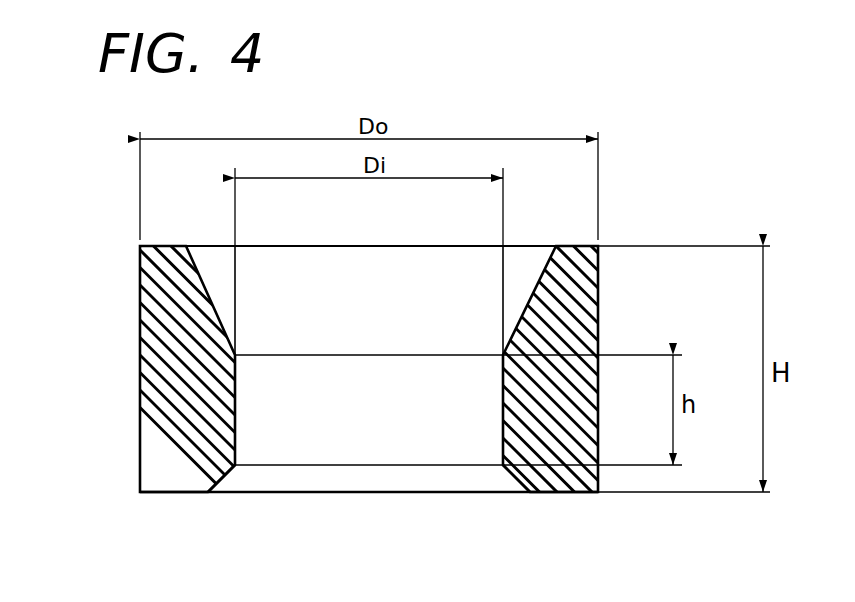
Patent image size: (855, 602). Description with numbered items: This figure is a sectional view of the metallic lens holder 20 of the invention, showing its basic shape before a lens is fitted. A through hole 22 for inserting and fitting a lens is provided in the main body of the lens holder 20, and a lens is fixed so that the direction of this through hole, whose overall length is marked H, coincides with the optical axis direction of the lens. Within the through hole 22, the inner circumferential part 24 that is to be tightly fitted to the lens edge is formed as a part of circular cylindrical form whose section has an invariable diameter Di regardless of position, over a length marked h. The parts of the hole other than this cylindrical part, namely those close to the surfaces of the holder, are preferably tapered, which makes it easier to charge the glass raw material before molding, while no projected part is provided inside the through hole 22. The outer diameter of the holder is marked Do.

The lens holder 20 is at (147, 323).
The through hole 22 is at (453, 455).
The inner circumferential part 24 is at (237, 425).